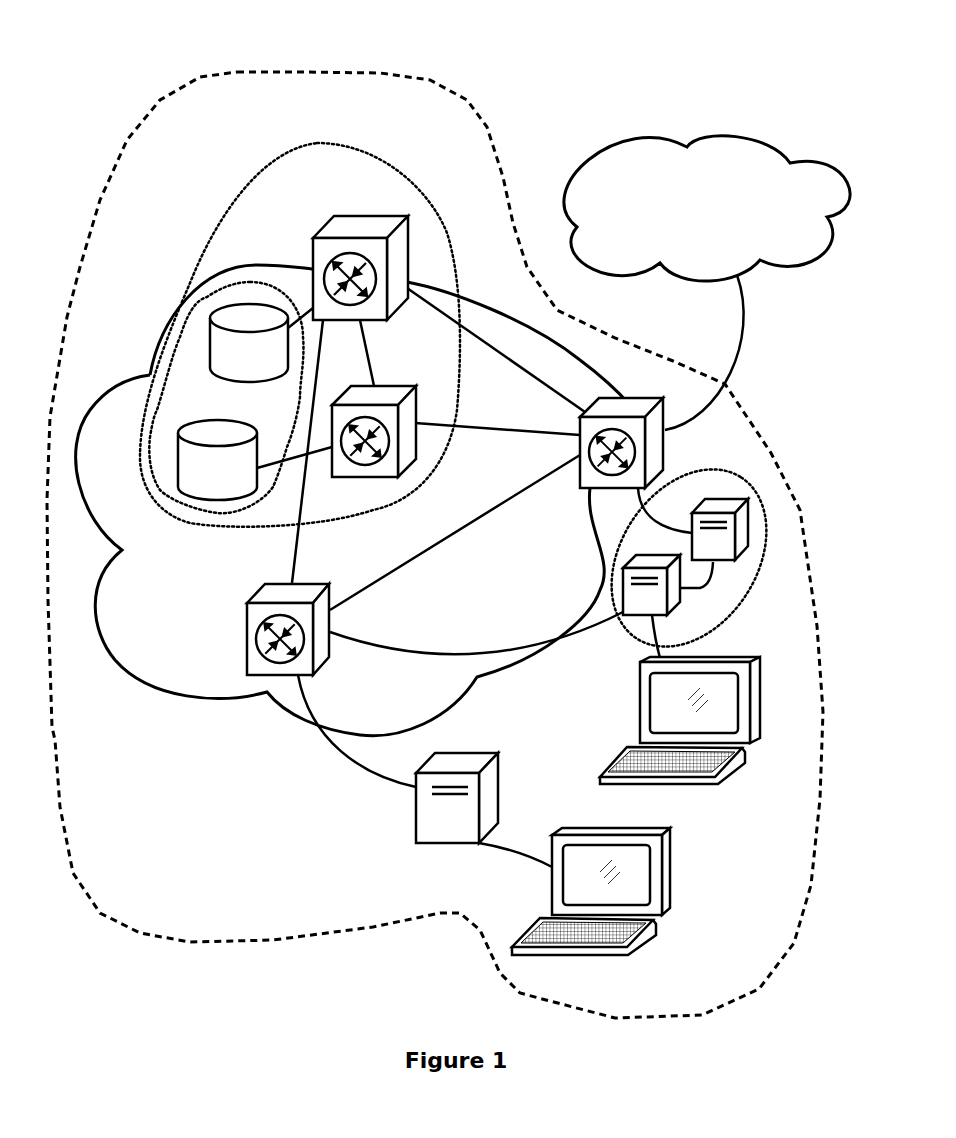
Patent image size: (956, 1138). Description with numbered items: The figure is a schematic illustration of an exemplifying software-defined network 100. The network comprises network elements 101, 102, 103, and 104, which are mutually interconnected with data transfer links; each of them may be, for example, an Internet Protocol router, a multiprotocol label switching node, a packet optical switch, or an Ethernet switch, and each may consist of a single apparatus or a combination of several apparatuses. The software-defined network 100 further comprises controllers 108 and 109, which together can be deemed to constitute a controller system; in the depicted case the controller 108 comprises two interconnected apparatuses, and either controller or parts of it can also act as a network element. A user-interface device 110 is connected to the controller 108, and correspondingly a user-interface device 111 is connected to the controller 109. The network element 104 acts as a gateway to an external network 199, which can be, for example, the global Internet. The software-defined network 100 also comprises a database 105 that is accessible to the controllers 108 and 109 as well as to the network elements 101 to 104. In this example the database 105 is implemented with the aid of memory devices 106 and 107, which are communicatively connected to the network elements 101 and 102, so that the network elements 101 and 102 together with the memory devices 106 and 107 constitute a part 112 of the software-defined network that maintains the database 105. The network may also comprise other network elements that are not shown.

The software-defined network 100 is at (233, 75).
The network element 101 is at (318, 232).
The network element 102 is at (380, 385).
The network element 103 is at (247, 665).
The network element 104 is at (590, 500).
The database 105 is at (172, 408).
The memory device 106 is at (249, 343).
The memory device 107 is at (217, 460).
The controller 108 is at (627, 638).
The controller 109 is at (448, 760).
The user-interface device 110 is at (745, 653).
The user-interface device 111 is at (668, 857).
The part of the software-defined network 112 is at (213, 220).
The external network 199 is at (707, 208).